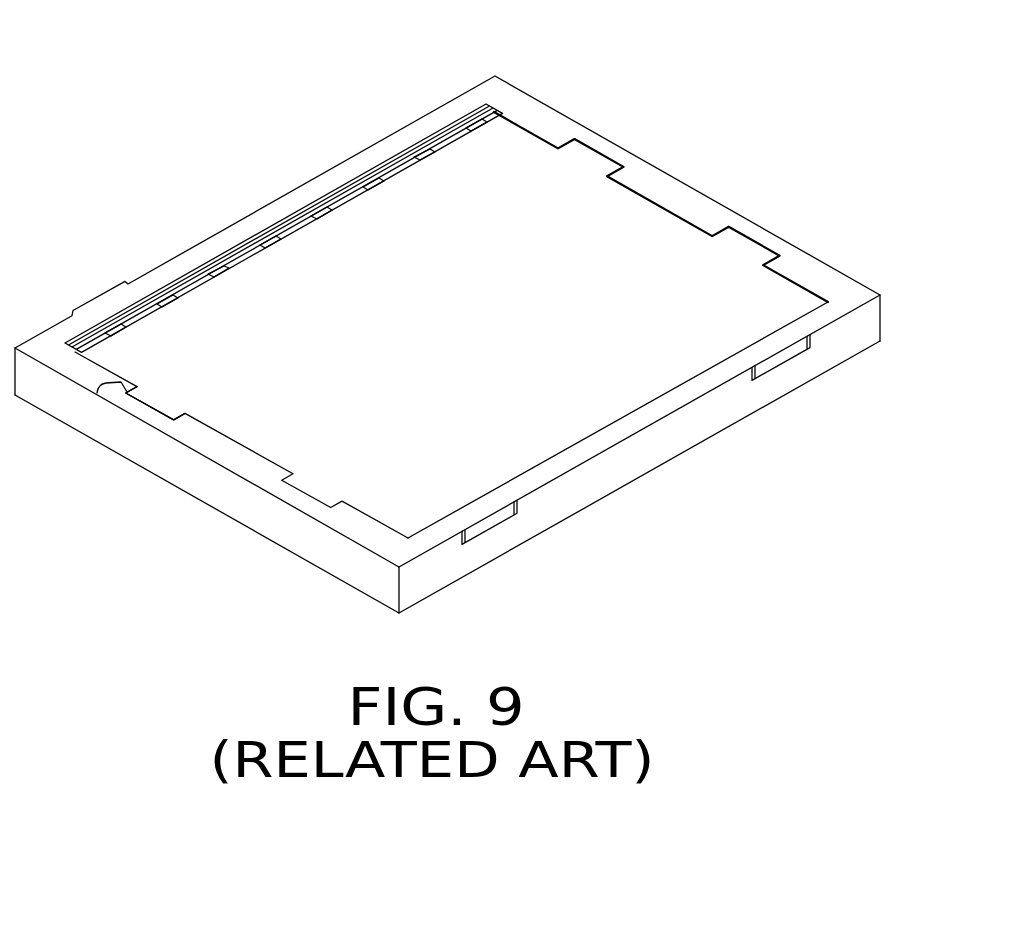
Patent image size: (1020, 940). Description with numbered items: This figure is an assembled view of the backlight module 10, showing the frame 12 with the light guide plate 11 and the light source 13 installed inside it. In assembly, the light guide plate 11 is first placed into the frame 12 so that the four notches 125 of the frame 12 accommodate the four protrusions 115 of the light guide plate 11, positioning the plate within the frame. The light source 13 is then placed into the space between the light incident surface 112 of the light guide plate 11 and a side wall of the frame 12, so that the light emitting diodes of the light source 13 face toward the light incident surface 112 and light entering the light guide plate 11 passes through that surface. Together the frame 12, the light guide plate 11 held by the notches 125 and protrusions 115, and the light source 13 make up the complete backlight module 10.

The backlight module 10 is at (540, 40).
The light guide plate 11 is at (678, 237).
The frame 12 is at (668, 193).
The light source 13 is at (283, 233).
The light incident surface 112 is at (330, 207).
The protrusions 115 is at (157, 407).
The notches 125 is at (100, 390).